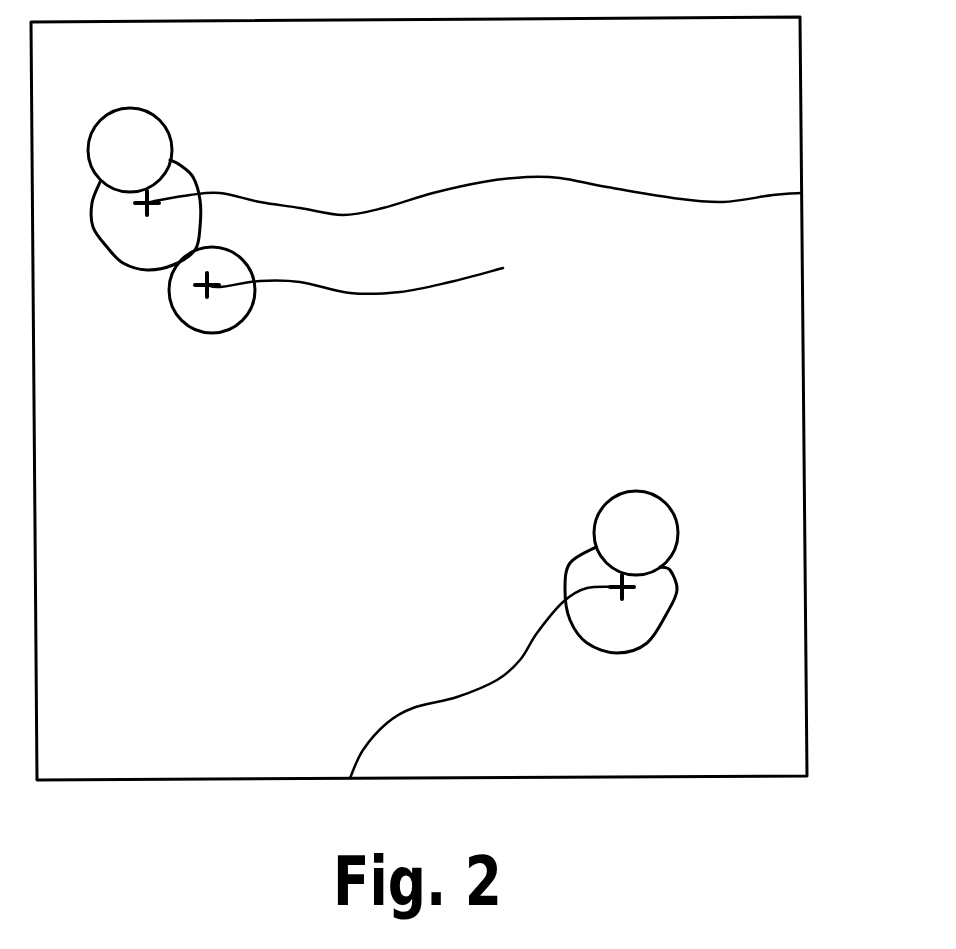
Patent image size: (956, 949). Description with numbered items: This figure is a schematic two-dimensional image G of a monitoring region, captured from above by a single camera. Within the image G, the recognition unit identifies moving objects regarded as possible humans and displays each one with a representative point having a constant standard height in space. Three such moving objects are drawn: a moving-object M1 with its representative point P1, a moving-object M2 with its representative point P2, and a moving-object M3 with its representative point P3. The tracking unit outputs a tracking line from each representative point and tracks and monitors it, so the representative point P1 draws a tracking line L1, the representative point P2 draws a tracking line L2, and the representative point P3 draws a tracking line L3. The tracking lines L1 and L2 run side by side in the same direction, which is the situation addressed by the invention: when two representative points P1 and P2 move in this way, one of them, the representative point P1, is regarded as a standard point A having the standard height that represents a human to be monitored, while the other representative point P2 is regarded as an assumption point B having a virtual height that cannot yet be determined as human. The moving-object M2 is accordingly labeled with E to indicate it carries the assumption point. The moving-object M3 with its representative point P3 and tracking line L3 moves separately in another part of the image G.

The two-dimensional image G is at (801, 83).
The tracking line L1 is at (527, 177).
The tracking line L2 is at (467, 277).
The tracking line L3 is at (453, 697).
The moving-object M1 is at (153, 135).
The moving-object M2 is at (237, 328).
The moving-object M3 is at (613, 513).
The representative point P1 is at (147, 217).
The representative point P2 is at (205, 295).
The representative point P3 is at (623, 603).